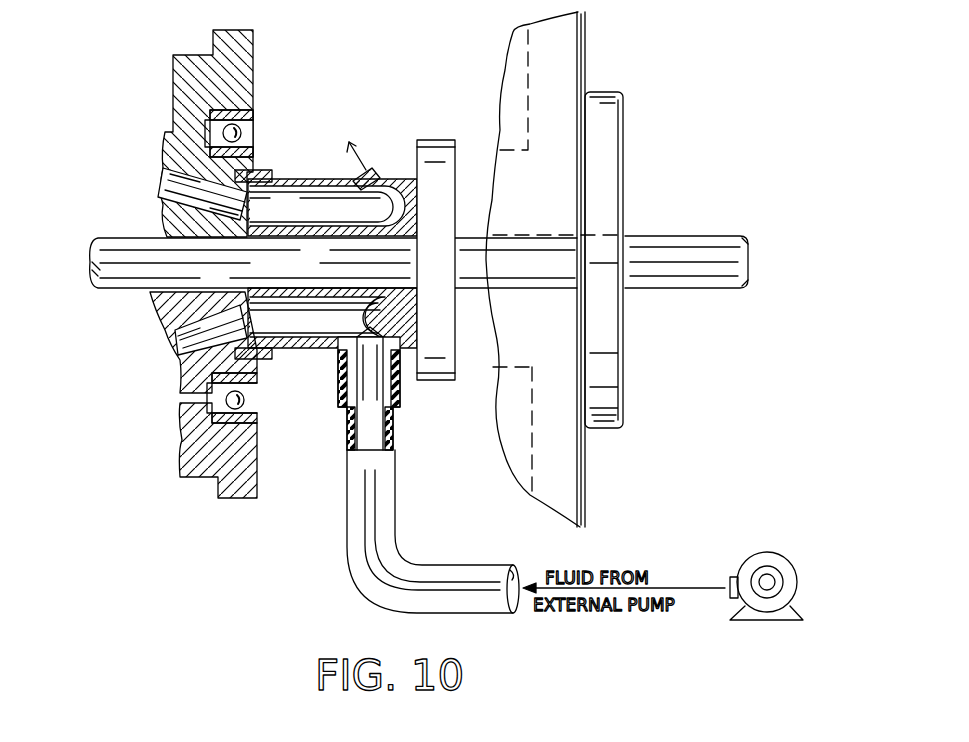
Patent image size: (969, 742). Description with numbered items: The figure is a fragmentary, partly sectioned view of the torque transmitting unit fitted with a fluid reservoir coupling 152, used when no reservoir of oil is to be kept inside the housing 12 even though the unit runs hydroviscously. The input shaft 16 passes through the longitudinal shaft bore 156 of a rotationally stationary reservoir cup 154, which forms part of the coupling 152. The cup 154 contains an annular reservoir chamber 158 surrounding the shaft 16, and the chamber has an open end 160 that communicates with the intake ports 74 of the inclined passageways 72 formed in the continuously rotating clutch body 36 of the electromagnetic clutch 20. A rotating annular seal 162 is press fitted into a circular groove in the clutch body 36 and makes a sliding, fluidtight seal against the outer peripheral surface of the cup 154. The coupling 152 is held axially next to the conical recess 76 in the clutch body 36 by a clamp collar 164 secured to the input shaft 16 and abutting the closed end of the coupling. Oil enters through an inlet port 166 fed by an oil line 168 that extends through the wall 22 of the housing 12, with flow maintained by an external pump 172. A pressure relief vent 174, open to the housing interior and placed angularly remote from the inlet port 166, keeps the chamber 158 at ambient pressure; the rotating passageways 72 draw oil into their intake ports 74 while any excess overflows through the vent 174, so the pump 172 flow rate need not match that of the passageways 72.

The housing 12 is at (598, 485).
The input shaft 16 is at (690, 236).
The electromagnetic clutch 20 is at (180, 448).
The wall 22 is at (596, 66).
The clutch body 36 is at (168, 145).
The passageways 72 is at (163, 188).
The intake port 74 is at (255, 208).
The conical recess 76 is at (263, 345).
The fluid reservoir coupling 152 is at (395, 158).
The reservoir cup 154 is at (308, 180).
The longitudinal shaft bore 156 is at (277, 240).
The annular reservoir chamber 158 is at (310, 228).
The open end 160 is at (232, 203).
The rotating annular seal 162 is at (256, 178).
The clamp collar 164 is at (437, 372).
The inlet port 166 is at (342, 388).
The oil line 168 is at (383, 588).
The external pump 172 is at (778, 561).
The pressure relief vent 174 is at (370, 165).